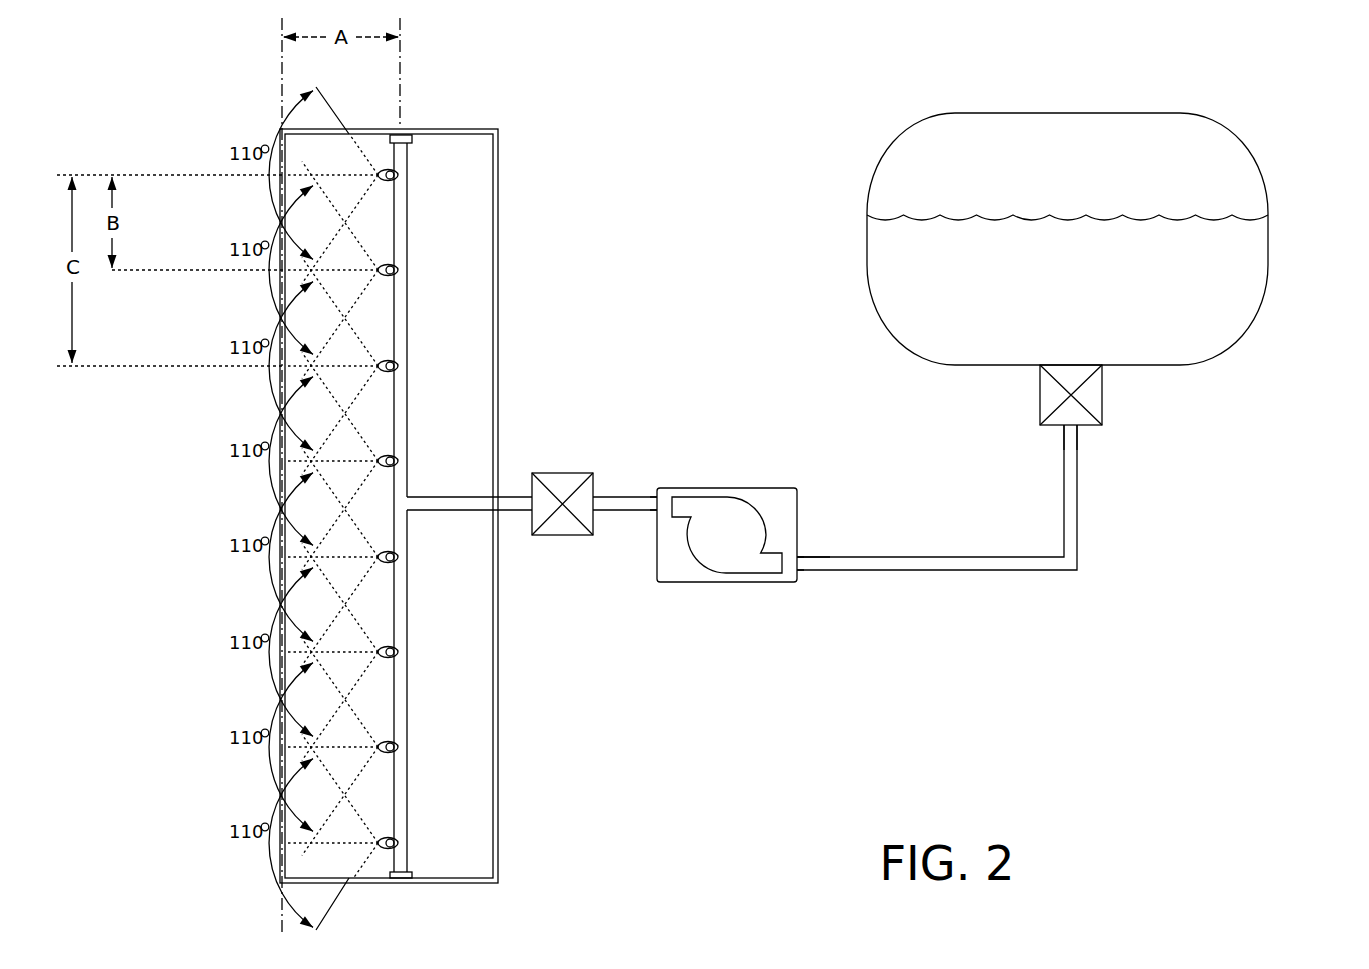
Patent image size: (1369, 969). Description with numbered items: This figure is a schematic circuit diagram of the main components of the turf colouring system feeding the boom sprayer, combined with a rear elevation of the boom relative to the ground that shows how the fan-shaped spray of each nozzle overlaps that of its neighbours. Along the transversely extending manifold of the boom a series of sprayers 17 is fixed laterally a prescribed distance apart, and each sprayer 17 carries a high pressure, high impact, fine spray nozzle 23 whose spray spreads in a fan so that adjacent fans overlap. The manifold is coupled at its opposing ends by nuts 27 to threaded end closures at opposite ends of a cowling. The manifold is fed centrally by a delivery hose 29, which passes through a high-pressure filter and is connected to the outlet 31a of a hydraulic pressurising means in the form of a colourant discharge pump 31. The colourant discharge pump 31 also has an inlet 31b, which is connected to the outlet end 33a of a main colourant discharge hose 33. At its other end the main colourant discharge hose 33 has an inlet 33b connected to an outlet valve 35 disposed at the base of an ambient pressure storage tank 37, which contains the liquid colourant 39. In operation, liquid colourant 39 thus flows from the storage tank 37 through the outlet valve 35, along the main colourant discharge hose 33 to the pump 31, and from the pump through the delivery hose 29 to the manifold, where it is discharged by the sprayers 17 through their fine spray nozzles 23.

The sprayer 17 is at (398, 175).
The fine spray nozzle 23 is at (378, 268).
The nut 27 is at (407, 400).
The delivery hose 29 is at (513, 511).
The colourant discharge pump 31 is at (710, 508).
The outlet 31a is at (652, 515).
The inlet 31b is at (813, 580).
The main colourant discharge hose 33 is at (1010, 563).
The outlet end 33a is at (827, 556).
The inlet 33b is at (1078, 428).
The outlet valve 35 is at (1102, 390).
The storage tank 37 is at (1268, 255).
The liquid colourant 39 is at (952, 282).